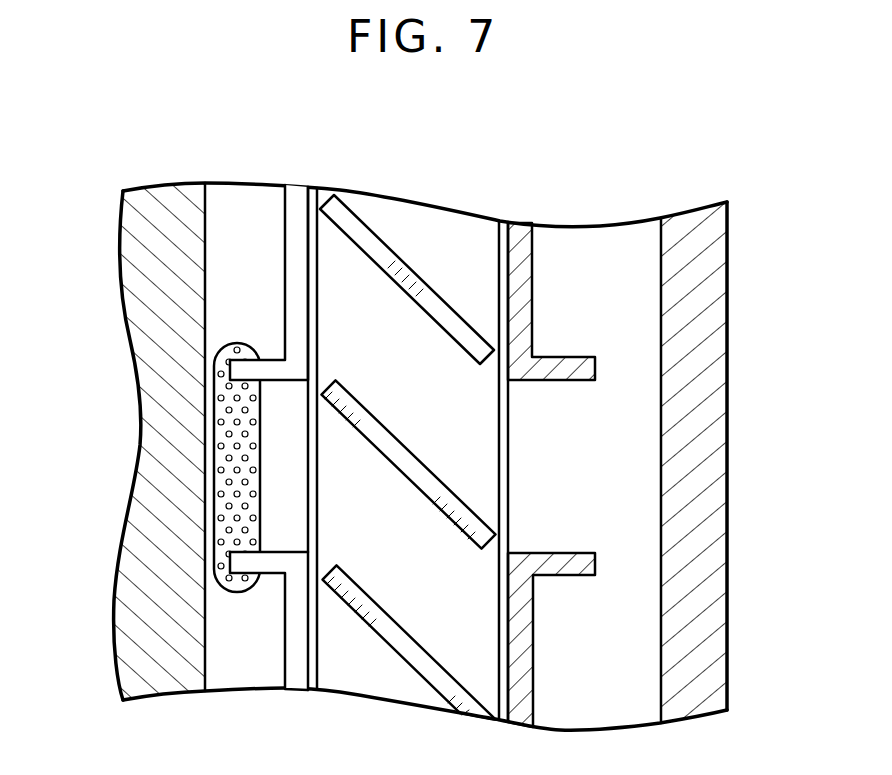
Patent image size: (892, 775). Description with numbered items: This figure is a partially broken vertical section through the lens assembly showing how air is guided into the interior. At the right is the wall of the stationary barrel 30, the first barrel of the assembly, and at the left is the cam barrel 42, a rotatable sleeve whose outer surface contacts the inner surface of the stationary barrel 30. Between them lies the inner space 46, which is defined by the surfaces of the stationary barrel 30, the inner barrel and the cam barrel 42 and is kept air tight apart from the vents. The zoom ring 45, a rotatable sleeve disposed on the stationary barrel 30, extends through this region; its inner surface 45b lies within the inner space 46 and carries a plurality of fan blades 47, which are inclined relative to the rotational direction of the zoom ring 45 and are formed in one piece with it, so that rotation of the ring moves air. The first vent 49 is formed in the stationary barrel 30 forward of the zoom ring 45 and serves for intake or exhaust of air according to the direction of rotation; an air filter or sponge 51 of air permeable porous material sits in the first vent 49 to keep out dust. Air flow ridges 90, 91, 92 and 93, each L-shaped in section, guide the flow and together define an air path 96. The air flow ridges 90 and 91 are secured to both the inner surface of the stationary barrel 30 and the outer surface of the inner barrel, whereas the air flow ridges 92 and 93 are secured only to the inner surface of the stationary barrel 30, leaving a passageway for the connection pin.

The stationary barrel 30 is at (728, 423).
The cam barrel 42 is at (132, 530).
The zoom ring 45 is at (500, 435).
The inner surface of the zoom ring 45b is at (480, 486).
The inner space 46 is at (643, 515).
The fan blades 47 is at (428, 310).
The first vent 49 is at (245, 480).
The air filter or sponge 51 is at (252, 420).
The air flow ridge 90 is at (527, 653).
The air flow ridge 91 is at (532, 295).
The air flow ridge 92 is at (292, 652).
The air flow ridge 93 is at (292, 268).
The air path 96 is at (308, 307).